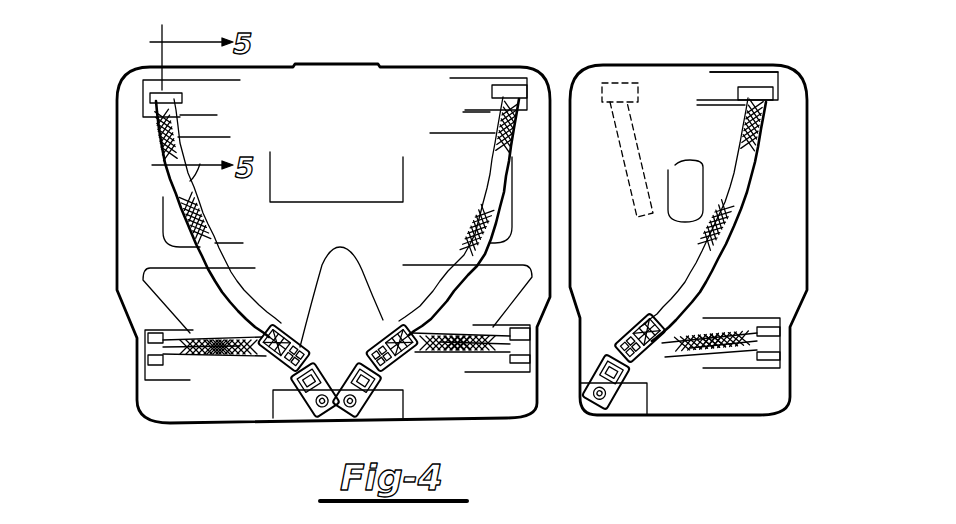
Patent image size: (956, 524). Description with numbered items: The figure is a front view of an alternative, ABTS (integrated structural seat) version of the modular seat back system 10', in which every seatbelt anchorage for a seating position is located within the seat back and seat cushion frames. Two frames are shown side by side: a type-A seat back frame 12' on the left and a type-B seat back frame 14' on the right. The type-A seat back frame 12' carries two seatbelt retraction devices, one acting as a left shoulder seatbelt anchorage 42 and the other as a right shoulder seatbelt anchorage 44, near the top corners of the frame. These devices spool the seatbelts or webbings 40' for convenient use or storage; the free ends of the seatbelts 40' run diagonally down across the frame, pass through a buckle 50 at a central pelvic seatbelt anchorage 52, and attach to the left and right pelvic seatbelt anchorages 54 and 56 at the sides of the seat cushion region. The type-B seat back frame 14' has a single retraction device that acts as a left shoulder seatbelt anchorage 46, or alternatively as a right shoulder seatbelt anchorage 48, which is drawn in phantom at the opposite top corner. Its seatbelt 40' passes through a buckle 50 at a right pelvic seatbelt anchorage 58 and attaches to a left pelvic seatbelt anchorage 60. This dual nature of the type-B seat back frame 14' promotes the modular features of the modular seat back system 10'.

The modular seat back system 10' is at (301, 222).
The type-A seat back frame 12' is at (336, 68).
The type-B seat back frame 14' is at (688, 218).
The seatbelts or webbings 40' is at (455, 181).
The left shoulder seatbelt anchorage 42 is at (500, 105).
The right shoulder seatbelt anchorage 44 is at (147, 98).
The left shoulder seatbelt anchorage 46 is at (757, 88).
The right shoulder seatbelt anchorage 48 is at (605, 62).
The buckle 50 is at (300, 400).
The central pelvic seatbelt anchorage 52 is at (322, 425).
The left pelvic seatbelt anchorage 54 is at (533, 367).
The right pelvic seatbelt anchorage 56 is at (147, 362).
The right pelvic seatbelt anchorage 58 is at (602, 418).
The left pelvic seatbelt anchorage 60 is at (767, 418).